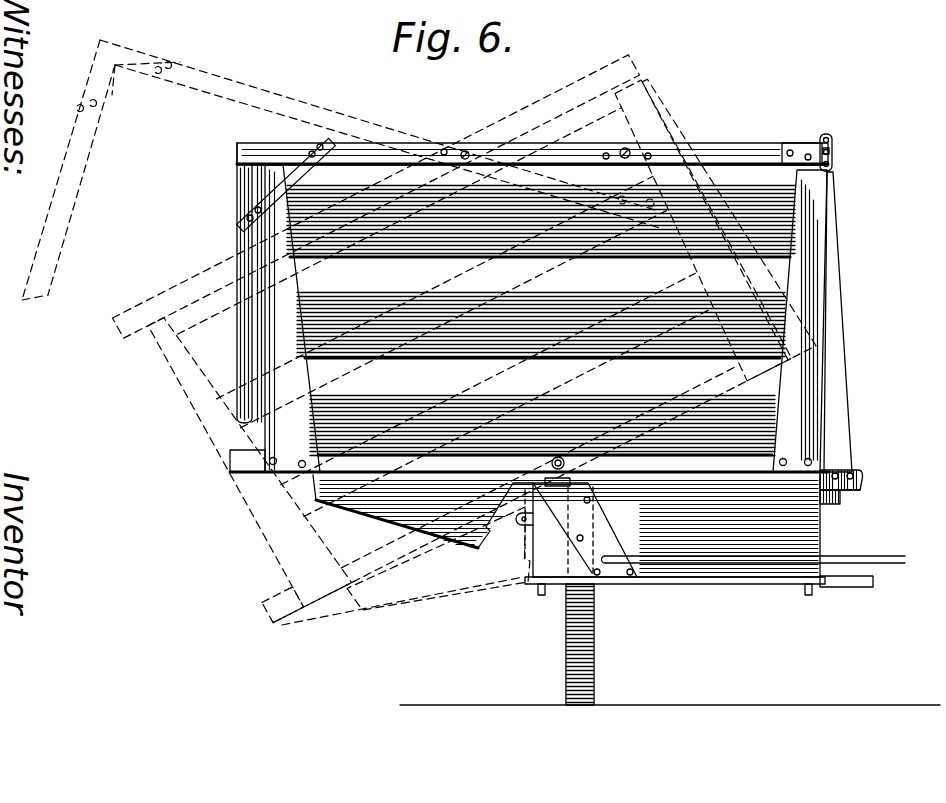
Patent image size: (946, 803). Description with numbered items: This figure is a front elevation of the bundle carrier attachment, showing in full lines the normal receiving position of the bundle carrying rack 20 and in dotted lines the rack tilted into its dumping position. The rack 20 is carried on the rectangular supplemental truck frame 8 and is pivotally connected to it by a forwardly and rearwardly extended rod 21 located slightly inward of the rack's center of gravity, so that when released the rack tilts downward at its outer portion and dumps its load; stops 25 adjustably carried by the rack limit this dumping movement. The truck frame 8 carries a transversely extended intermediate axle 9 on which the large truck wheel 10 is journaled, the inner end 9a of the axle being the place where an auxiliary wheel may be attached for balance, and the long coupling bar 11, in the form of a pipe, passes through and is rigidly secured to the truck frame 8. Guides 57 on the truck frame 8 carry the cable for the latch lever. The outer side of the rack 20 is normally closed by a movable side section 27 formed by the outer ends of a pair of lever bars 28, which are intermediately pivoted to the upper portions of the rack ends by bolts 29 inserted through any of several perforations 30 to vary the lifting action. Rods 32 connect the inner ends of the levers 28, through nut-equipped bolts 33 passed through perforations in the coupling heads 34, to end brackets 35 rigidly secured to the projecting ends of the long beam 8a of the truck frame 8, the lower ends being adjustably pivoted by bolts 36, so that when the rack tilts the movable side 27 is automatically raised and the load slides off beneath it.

The supplemental truck frame 8 is at (710, 545).
The long beam 8a is at (830, 500).
The intermediate axle 9 is at (762, 585).
The inner end of the axle 9a is at (865, 587).
The truck wheel 10 is at (590, 633).
The coupling bar 11 is at (752, 560).
The bundle carrying rack 20 is at (305, 303).
The rod 21 is at (560, 457).
The stops 25 is at (478, 533).
The movable side section 27 is at (65, 208).
The lever bars 28 is at (330, 142).
The bolts 29 is at (465, 152).
The perforations 30 is at (443, 150).
The rods 32 is at (845, 305).
The nut-equipped bolts 33 is at (835, 153).
The coupling heads 34 is at (800, 143).
The end brackets 35 is at (858, 488).
The bolts 36 is at (852, 476).
The guides 57 is at (530, 520).